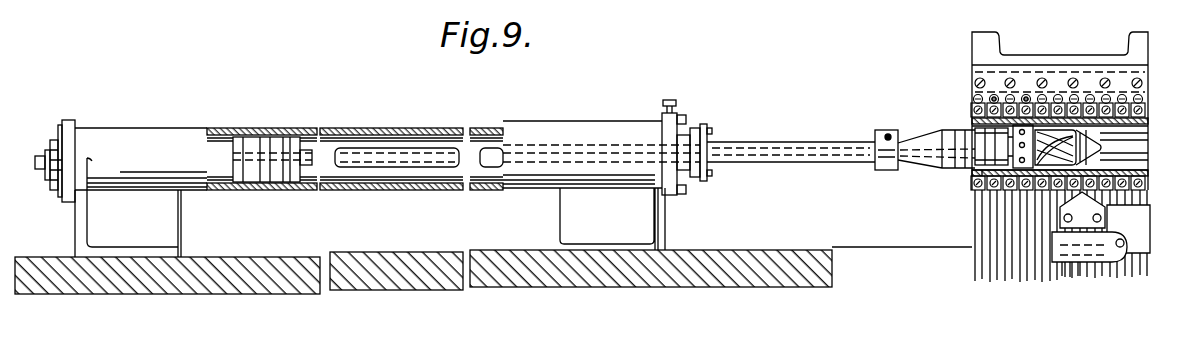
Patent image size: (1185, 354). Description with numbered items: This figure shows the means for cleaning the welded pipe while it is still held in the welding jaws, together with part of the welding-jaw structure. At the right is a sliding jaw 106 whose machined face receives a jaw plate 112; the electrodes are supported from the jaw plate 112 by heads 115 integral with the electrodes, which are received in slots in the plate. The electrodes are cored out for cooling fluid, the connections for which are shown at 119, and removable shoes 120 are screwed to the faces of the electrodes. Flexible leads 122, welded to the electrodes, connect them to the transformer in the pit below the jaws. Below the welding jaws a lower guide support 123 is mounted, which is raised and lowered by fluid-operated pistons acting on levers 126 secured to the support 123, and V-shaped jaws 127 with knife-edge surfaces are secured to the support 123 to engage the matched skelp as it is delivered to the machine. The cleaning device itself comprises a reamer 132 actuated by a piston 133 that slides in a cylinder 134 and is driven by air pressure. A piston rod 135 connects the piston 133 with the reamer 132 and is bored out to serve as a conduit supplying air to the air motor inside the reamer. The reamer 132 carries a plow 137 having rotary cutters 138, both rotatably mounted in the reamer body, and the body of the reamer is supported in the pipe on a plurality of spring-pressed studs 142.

The sliding jaw 106 is at (1057, 61).
The jaw plate 112 is at (975, 70).
The head 115 is at (1026, 95).
The cooling fluid connection 119 is at (974, 99).
The removable shoe 120 is at (971, 110).
The flexible lead 122 is at (998, 229).
The lower guide support 123 is at (1130, 250).
The lever 126 is at (1072, 260).
The V-shaped jaw 127 is at (1105, 222).
The reamer 132 is at (940, 160).
The piston 133 is at (268, 137).
The cylinder 134 is at (365, 119).
The piston rod 135 is at (415, 150).
The plow 137 is at (1092, 142).
The rotary cutter 138 is at (1096, 150).
The spring-pressed stud 142 is at (888, 134).